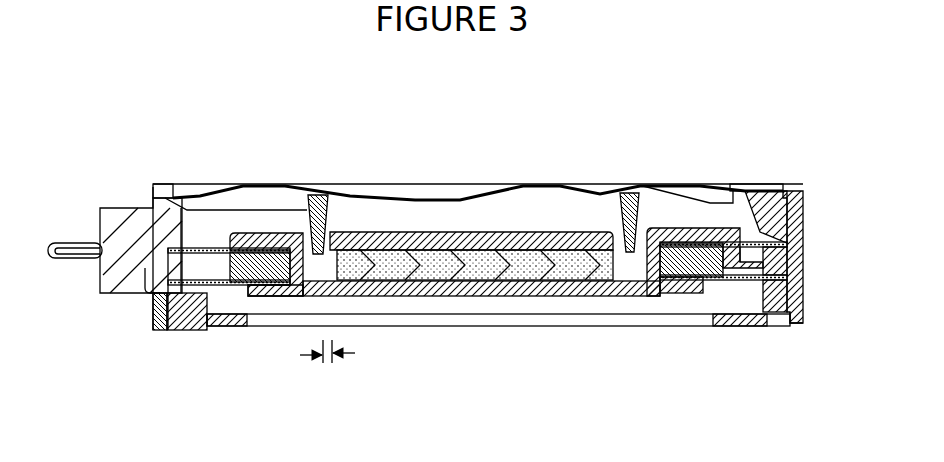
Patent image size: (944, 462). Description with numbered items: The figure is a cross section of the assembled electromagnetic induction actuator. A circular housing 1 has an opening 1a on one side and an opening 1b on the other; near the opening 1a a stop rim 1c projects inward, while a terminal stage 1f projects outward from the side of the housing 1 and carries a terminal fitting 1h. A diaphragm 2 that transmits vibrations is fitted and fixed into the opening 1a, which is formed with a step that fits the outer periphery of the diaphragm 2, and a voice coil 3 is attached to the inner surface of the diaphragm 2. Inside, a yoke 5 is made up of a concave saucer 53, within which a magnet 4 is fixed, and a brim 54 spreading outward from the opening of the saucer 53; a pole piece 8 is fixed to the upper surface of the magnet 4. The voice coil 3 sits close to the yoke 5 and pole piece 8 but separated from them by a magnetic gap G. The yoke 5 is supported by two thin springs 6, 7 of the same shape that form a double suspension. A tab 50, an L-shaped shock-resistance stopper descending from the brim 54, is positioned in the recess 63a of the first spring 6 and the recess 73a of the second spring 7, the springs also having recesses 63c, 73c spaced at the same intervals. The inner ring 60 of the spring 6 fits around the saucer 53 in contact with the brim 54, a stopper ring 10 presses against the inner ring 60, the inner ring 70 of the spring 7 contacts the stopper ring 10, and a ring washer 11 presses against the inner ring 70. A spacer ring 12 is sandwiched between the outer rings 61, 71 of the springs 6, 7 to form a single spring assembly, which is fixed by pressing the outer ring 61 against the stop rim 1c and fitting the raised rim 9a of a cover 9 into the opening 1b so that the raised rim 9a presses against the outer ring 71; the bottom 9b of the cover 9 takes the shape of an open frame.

The housing 1 is at (807, 194).
The opening 1a is at (767, 183).
The opening 1b is at (779, 322).
The stop rim 1c is at (765, 230).
The terminal stage 1f is at (100, 218).
The terminal fitting 1h is at (72, 243).
The diaphragm 2 is at (548, 182).
The voice coil 3 is at (353, 197).
The magnet 4 is at (460, 282).
The yoke 5 is at (533, 298).
The spring 6 is at (678, 240).
The spring 7 is at (682, 285).
The pole piece 8 is at (460, 232).
The cover 9 is at (575, 328).
The raised rim 9a is at (183, 332).
The bottom 9b is at (247, 320).
The stopper ring 10 is at (112, 268).
The ring washer 11 is at (260, 285).
The spacer ring 12 is at (763, 266).
The tab 50 is at (735, 290).
The saucer 53 is at (403, 290).
The brim 54 is at (277, 232).
The inner ring 60 is at (622, 193).
The outer ring 61 is at (187, 208).
The recess 63a is at (717, 186).
The recess 63c is at (225, 245).
The inner ring 70 is at (631, 283).
The outer ring 71 is at (140, 292).
The recess 73a is at (747, 326).
The recess 73c is at (203, 287).
The magnetic gap G is at (327, 365).